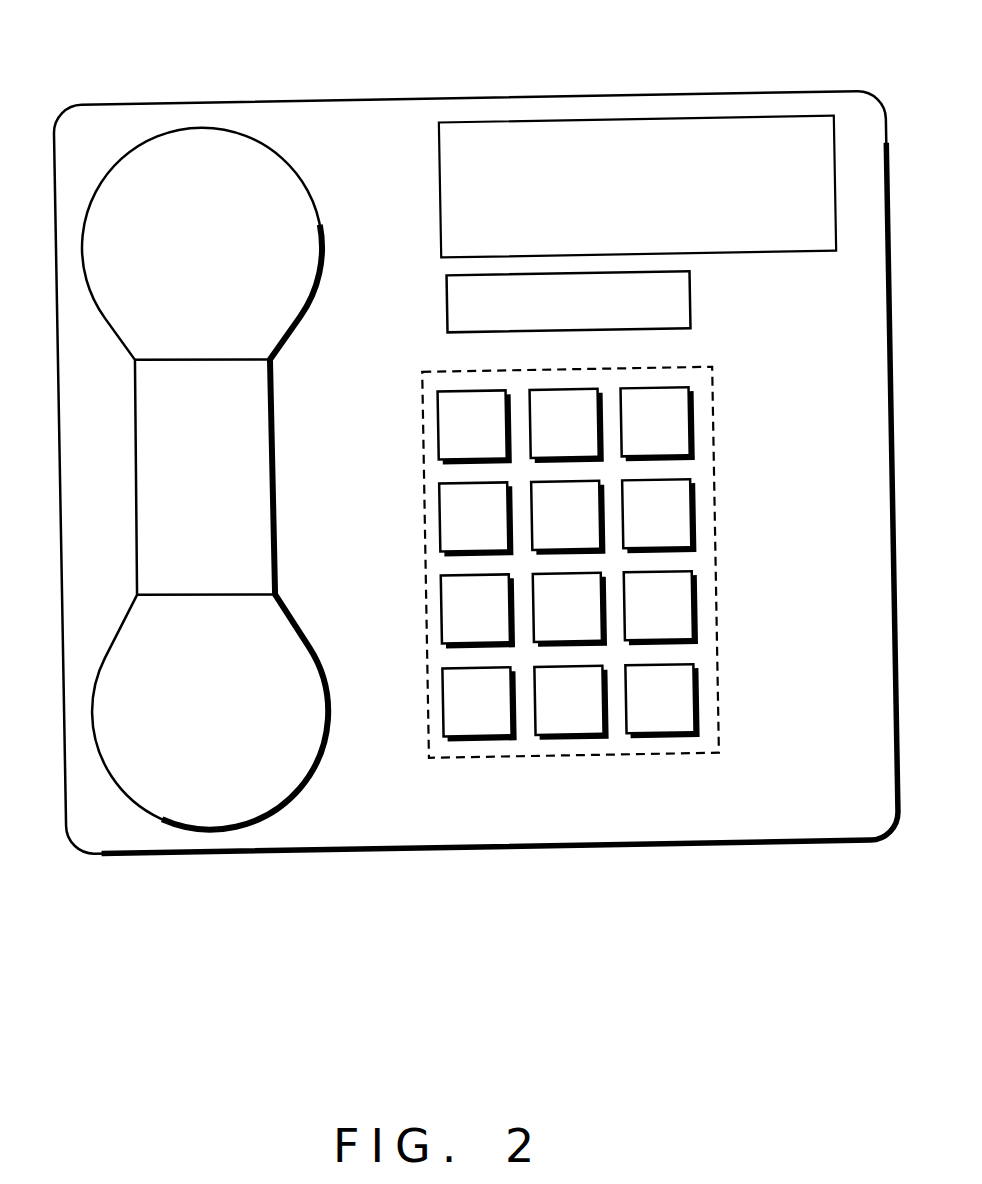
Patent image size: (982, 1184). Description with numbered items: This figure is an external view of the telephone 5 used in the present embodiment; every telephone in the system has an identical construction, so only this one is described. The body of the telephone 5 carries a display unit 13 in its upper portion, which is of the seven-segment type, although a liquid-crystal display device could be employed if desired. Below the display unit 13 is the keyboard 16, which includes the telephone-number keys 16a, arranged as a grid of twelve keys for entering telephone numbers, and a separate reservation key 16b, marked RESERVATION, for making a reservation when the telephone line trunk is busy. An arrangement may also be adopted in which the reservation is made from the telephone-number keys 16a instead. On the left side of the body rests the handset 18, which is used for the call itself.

The telephone 5 is at (663, 96).
The display unit 13 is at (520, 118).
The keyboard 16 is at (613, 785).
The telephone-number keys 16a is at (450, 763).
The reservation key 16b is at (447, 308).
The handset 18 is at (252, 142).